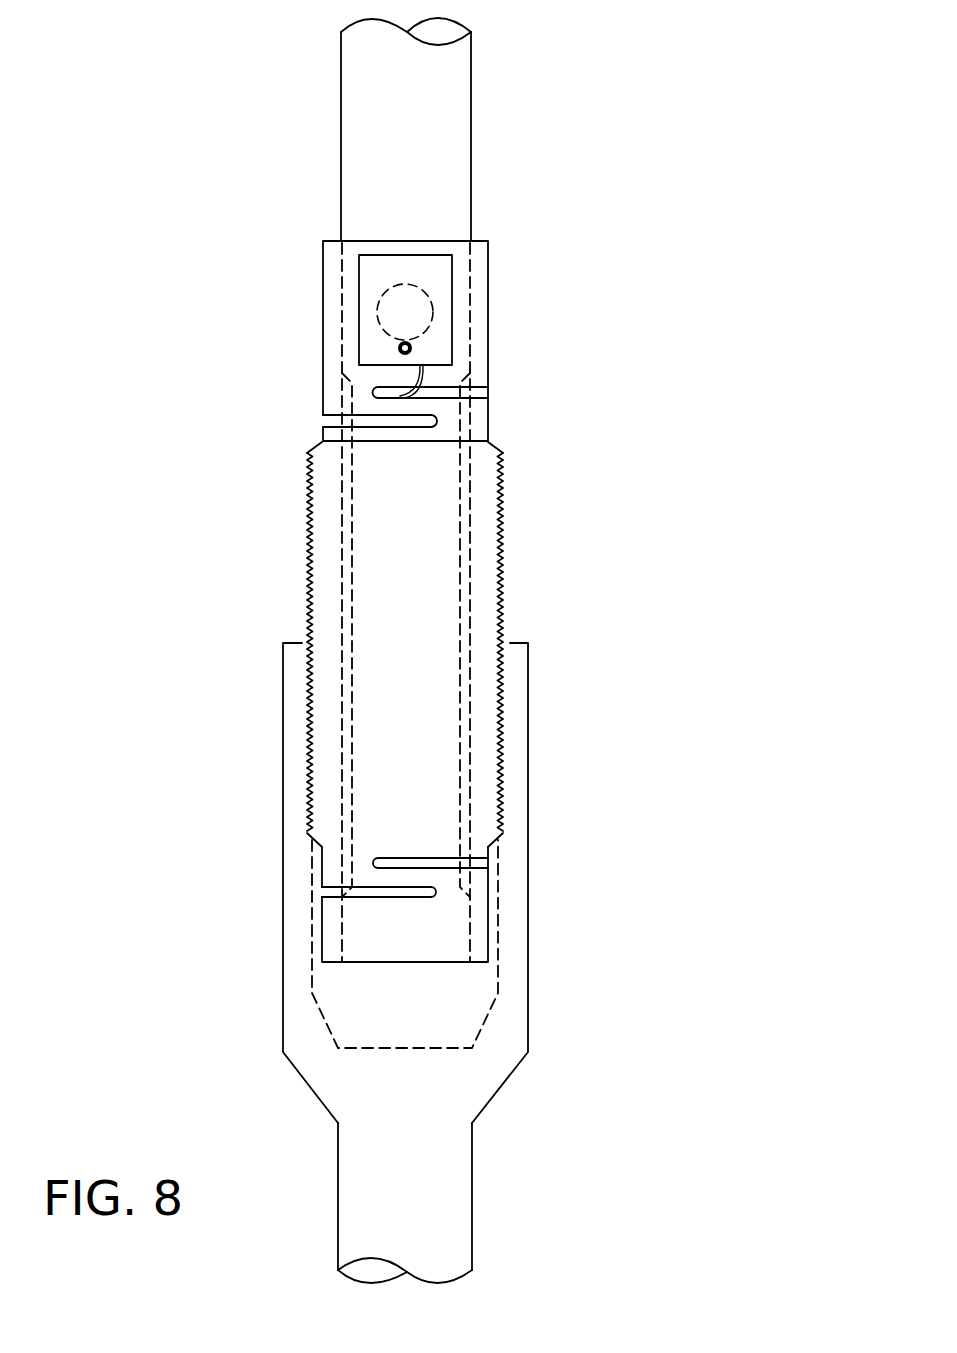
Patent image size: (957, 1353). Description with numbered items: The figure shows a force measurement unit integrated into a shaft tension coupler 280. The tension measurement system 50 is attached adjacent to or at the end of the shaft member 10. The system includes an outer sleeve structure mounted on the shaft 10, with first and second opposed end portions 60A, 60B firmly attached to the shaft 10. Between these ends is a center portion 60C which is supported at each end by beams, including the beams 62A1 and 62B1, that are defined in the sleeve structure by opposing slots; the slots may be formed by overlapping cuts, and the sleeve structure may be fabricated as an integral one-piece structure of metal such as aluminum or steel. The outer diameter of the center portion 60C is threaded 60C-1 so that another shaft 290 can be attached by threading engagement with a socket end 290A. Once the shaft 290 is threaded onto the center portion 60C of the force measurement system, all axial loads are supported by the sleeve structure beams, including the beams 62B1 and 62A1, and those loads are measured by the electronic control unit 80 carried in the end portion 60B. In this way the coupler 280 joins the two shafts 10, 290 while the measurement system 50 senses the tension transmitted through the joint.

The shaft member 10 is at (454, 173).
The tension measurement system 50 is at (413, 584).
The first end portion 60A is at (330, 927).
The second end portion 60B is at (330, 268).
The center portion 60C is at (317, 493).
The threads 60C-1 is at (310, 732).
The beam 62A1 is at (398, 879).
The beam 62B1 is at (408, 407).
The electronic control unit 80 is at (358, 317).
The shaft tension coupler 280 is at (120, 731).
The shaft 290 is at (453, 1178).
The socket end 290A is at (283, 692).